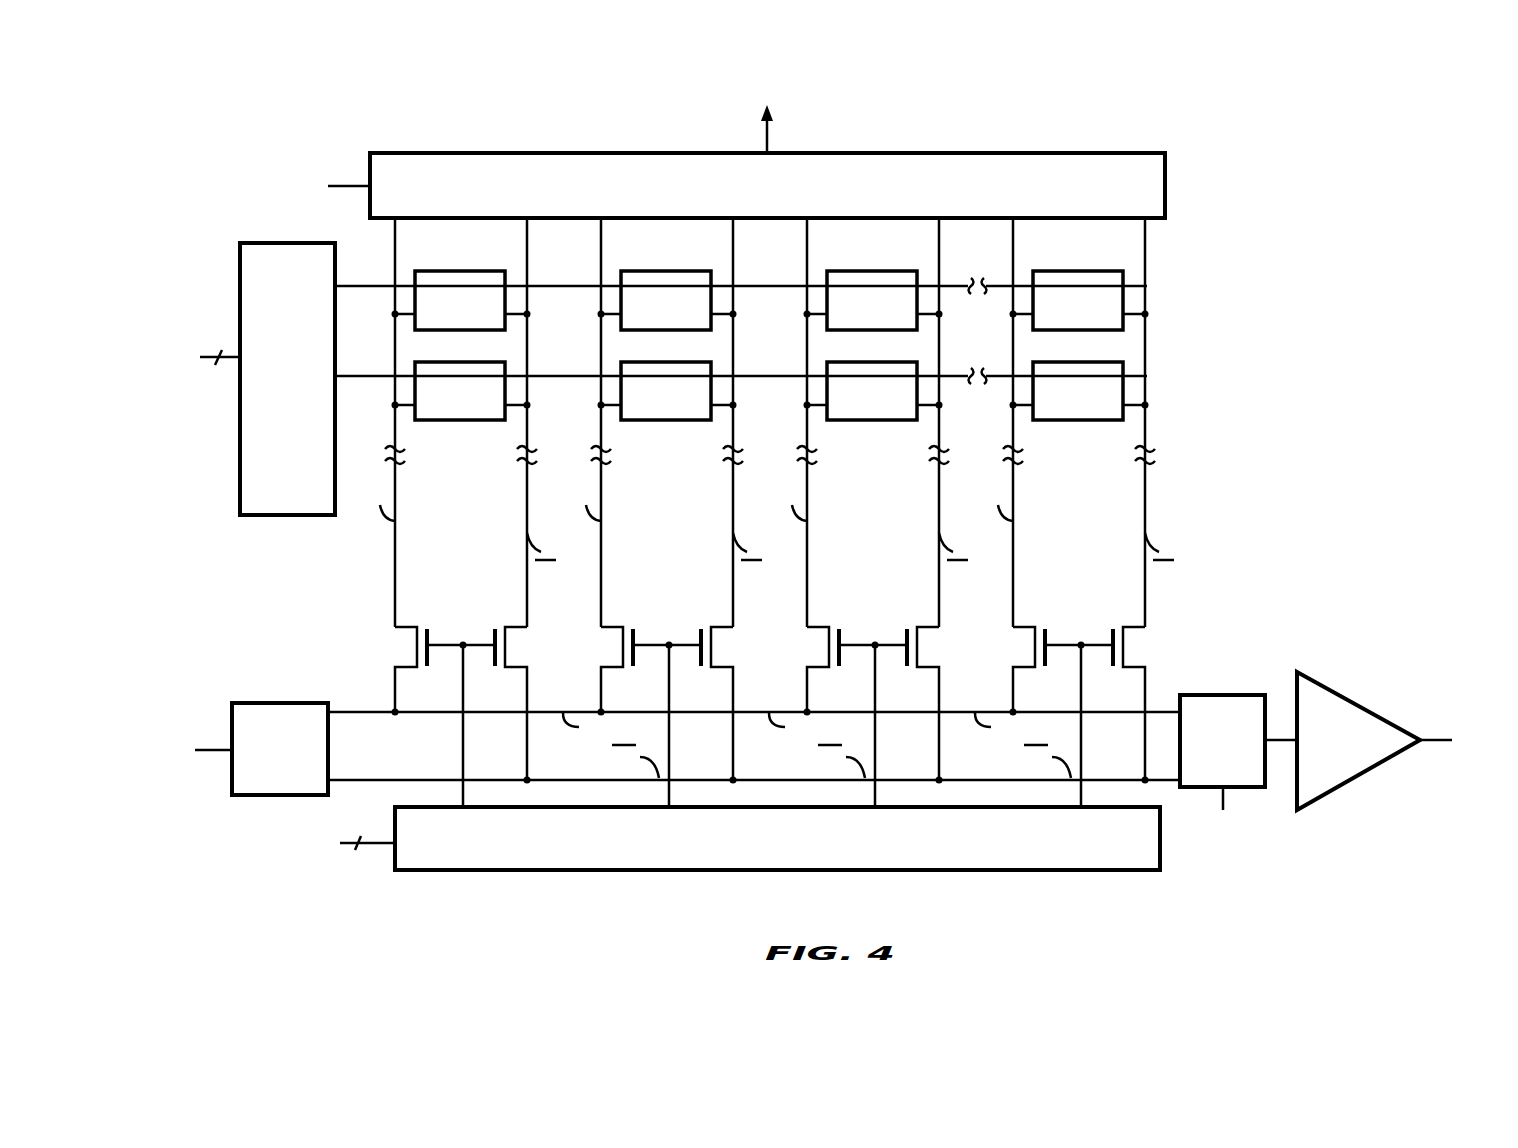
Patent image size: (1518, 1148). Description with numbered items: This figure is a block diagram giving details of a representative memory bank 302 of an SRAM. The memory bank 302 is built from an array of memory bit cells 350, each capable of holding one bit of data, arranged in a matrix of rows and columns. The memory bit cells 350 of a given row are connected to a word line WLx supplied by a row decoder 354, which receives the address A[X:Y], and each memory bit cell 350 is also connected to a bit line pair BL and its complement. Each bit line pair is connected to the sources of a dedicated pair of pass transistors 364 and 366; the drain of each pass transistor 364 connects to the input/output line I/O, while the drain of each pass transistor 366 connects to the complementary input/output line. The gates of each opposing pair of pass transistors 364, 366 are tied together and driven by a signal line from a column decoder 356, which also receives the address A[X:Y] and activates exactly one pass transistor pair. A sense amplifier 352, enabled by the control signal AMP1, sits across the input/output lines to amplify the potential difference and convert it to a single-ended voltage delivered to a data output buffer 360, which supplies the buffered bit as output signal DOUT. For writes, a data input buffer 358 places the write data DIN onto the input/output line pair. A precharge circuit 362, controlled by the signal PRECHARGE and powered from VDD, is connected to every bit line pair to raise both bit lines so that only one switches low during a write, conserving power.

The memory bank 302 is at (1202, 138).
The memory bit cell 350 is at (1073, 441).
The sense amplifier 352 is at (1246, 695).
The row decoder 354 is at (240, 297).
The column decoder 356 is at (1008, 873).
The data input buffer 358 is at (260, 702).
The data output buffer 360 is at (1337, 692).
The precharge circuit 362 is at (505, 153).
The pass transistor 364 is at (1021, 651).
The pass transistor 366 is at (1166, 631).